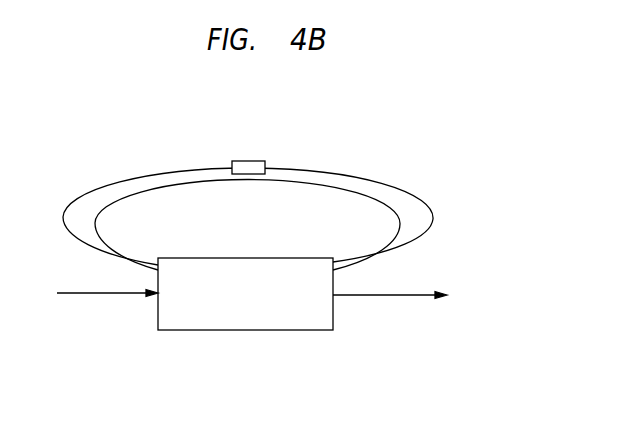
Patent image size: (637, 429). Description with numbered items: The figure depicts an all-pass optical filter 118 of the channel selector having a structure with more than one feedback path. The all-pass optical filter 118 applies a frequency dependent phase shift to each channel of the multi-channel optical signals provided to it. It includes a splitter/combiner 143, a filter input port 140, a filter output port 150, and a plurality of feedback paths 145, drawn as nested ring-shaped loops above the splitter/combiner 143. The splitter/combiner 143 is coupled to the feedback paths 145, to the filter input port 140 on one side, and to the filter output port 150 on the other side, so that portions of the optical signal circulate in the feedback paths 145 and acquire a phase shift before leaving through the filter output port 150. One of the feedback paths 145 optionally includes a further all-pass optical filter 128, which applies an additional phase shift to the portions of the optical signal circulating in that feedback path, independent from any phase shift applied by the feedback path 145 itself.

The all-pass optical filter 118 is at (366, 403).
The all-pass optical filter 128 is at (259, 161).
The filter input port 140 is at (82, 294).
The splitter/combiner 143 is at (213, 330).
The feedback path 145 is at (318, 185).
The filter output port 150 is at (427, 294).